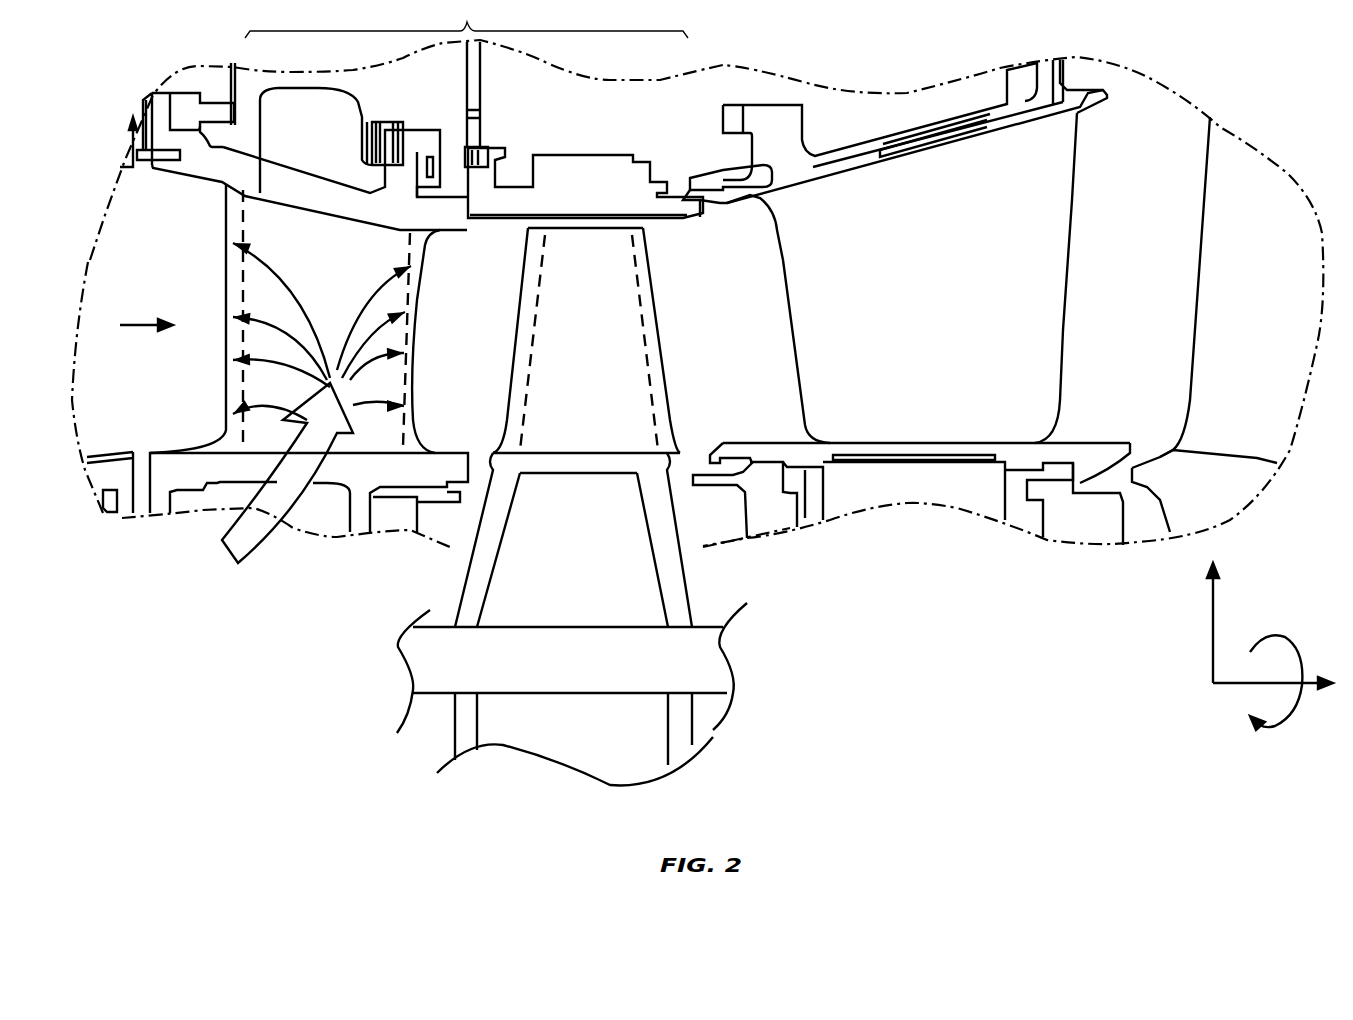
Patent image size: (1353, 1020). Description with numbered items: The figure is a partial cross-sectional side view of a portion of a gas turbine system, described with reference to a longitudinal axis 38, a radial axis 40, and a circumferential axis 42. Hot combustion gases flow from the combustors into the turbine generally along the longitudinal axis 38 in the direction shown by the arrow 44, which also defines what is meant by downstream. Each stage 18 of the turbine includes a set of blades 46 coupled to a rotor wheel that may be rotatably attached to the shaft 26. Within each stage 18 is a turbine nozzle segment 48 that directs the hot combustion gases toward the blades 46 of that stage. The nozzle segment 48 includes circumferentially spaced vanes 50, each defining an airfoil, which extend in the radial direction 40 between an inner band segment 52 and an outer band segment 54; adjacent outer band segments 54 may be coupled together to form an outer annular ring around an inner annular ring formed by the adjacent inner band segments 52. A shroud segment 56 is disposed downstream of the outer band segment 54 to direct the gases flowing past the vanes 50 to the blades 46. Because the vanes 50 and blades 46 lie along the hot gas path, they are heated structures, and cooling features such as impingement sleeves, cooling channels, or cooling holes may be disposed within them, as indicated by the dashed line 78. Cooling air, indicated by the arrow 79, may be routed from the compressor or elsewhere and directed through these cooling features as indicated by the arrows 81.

The stage 18 is at (467, 22).
The shaft 26 is at (690, 667).
The longitudinal axis 38 is at (1273, 683).
The radial axis 40 is at (1213, 622).
The circumferential axis 42 is at (1297, 645).
The arrow 44 is at (143, 320).
The blades 46 is at (586, 340).
The turbine nozzle segment 48 is at (303, 572).
The vanes 50 is at (680, 285).
The inner band segment 52 is at (203, 465).
The outer band segment 54 is at (233, 170).
The shroud segment 56 is at (590, 203).
The dashed line 78 is at (243, 390).
The arrow 79 is at (300, 510).
The arrows 81 is at (273, 267).